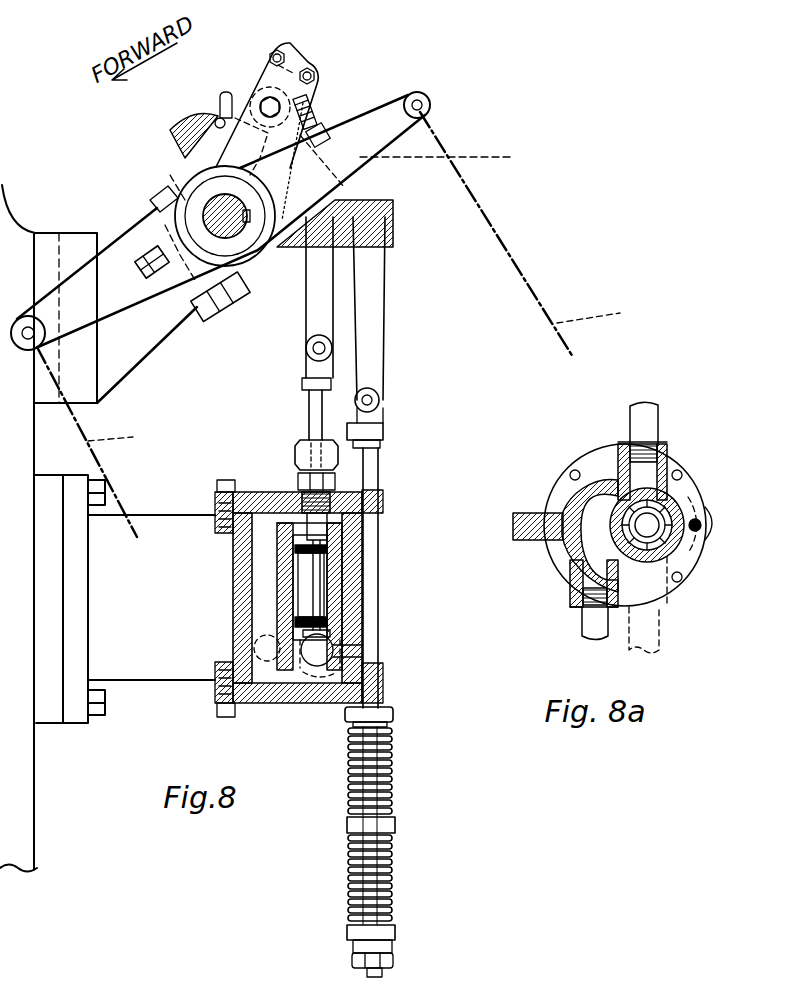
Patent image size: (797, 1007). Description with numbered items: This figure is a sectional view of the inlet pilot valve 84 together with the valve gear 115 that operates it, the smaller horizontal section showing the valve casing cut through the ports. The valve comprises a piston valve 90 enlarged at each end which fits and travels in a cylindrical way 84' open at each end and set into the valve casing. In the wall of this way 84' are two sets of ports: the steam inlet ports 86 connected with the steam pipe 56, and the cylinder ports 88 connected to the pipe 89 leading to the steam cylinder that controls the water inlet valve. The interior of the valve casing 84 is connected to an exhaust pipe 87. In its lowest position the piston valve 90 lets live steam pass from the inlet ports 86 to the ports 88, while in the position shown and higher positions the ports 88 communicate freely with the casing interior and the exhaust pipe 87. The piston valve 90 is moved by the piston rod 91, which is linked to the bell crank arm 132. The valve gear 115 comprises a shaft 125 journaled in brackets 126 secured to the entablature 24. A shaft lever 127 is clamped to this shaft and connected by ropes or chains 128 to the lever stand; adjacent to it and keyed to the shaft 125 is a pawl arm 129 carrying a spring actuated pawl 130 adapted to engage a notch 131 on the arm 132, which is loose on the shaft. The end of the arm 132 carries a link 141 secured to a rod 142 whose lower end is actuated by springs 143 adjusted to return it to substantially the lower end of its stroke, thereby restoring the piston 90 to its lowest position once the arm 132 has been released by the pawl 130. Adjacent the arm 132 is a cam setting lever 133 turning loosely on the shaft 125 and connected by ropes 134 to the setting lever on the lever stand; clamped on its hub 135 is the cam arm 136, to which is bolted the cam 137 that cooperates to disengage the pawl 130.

In FIG. 8, the entablature 24 is at (27, 775).
In FIG. 8, the steam pipe 56 is at (300, 592).
In FIG. 8A, the steam pipe 56 is at (661, 636).
In FIG. 8, the inlet pilot valve 84 is at (299, 607).
In FIG. 8A, the inlet pilot valve 84 is at (612, 525).
In FIG. 8, the cylindrical way 84' is at (270, 596).
In FIG. 8A, the cylindrical way 84' is at (683, 509).
In FIG. 8, the steam inlet ports 86 is at (313, 572).
In FIG. 8, the exhaust pipe 87 is at (268, 647).
In FIG. 8A, the exhaust pipe 87 is at (594, 600).
In FIG. 8, the cylinder ports 88 is at (290, 663).
In FIG. 8A, the cylinder ports 88 is at (661, 540).
In FIG. 8, the pipe 89 is at (320, 650).
In FIG. 8A, the pipe 89 is at (642, 451).
In FIG. 8, the piston valve 90 is at (337, 567).
In FIG. 8, the piston rod 91 is at (310, 410).
In FIG. 8, the valve gear 115 is at (133, 187).
In FIG. 8, the shaft 125 is at (210, 213).
In FIG. 8, the brackets 126 is at (143, 354).
In FIG. 8, the shaft lever 127 is at (457, 158).
In FIG. 8, the ropes or chains 128 is at (378, 376).
In FIG. 8, the pawl arm 129 is at (333, 118).
In FIG. 8, the spring actuated pawl 130 is at (226, 113).
In FIG. 8, the notch 131 is at (214, 119).
In FIG. 8, the bell crank arm 132 is at (171, 132).
In FIG. 8, the cam setting lever 133 is at (77, 280).
In FIG. 8, the ropes 134 is at (620, 350).
In FIG. 8, the hub 135 is at (258, 262).
In FIG. 8, the cam arm 136 is at (258, 72).
In FIG. 8, the cam 137 is at (287, 66).
In FIG. 8, the link 141 is at (368, 335).
In FIG. 8, the rod 142 is at (379, 607).
In FIG. 8A, the rod 142 is at (702, 524).
In FIG. 8, the springs 143 is at (388, 883).